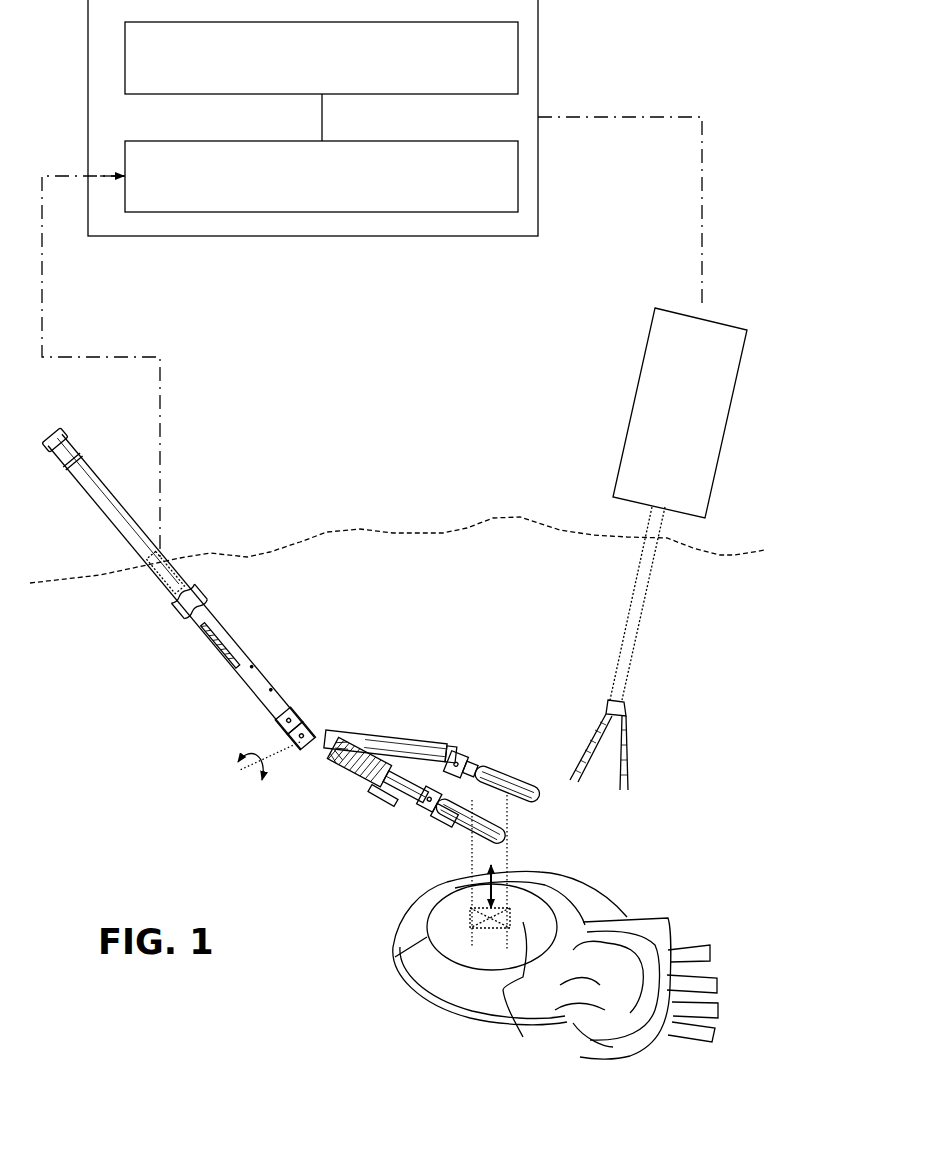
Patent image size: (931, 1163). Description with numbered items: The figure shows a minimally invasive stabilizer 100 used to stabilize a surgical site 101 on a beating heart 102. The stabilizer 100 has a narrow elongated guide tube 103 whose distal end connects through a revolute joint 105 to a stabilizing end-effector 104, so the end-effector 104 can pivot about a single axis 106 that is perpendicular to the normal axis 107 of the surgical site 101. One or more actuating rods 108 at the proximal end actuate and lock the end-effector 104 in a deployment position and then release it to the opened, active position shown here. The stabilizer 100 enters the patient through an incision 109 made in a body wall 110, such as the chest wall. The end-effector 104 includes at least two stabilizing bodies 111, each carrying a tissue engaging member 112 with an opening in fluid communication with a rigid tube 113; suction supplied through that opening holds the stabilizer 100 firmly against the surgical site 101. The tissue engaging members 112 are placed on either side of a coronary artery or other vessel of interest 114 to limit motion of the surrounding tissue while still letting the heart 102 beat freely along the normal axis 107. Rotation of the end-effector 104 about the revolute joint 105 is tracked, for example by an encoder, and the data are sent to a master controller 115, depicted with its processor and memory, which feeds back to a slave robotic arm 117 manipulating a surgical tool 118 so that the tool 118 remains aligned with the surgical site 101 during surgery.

The minimally invasive stabilizer 100 is at (307, 649).
The surgical site 101 is at (488, 950).
The beating heart 102 is at (403, 985).
The guide tube 103 is at (210, 663).
The stabilizing end-effector 104 is at (430, 705).
The revolute joint 105 is at (297, 755).
The single axis 106 is at (237, 771).
The normal axis 107 is at (480, 918).
The actuating rods 108 is at (85, 463).
The incision 109 is at (173, 553).
The body wall 110 is at (405, 530).
The stabilizing bodies 111 is at (487, 757).
The tissue engaging member 112 is at (523, 778).
The rigid tube 113 is at (382, 787).
The vessel of interest 114 is at (505, 992).
The master controller 115 is at (299, 237).
The slave robotic arm 117 is at (666, 428).
The surgical tool 118 is at (640, 692).